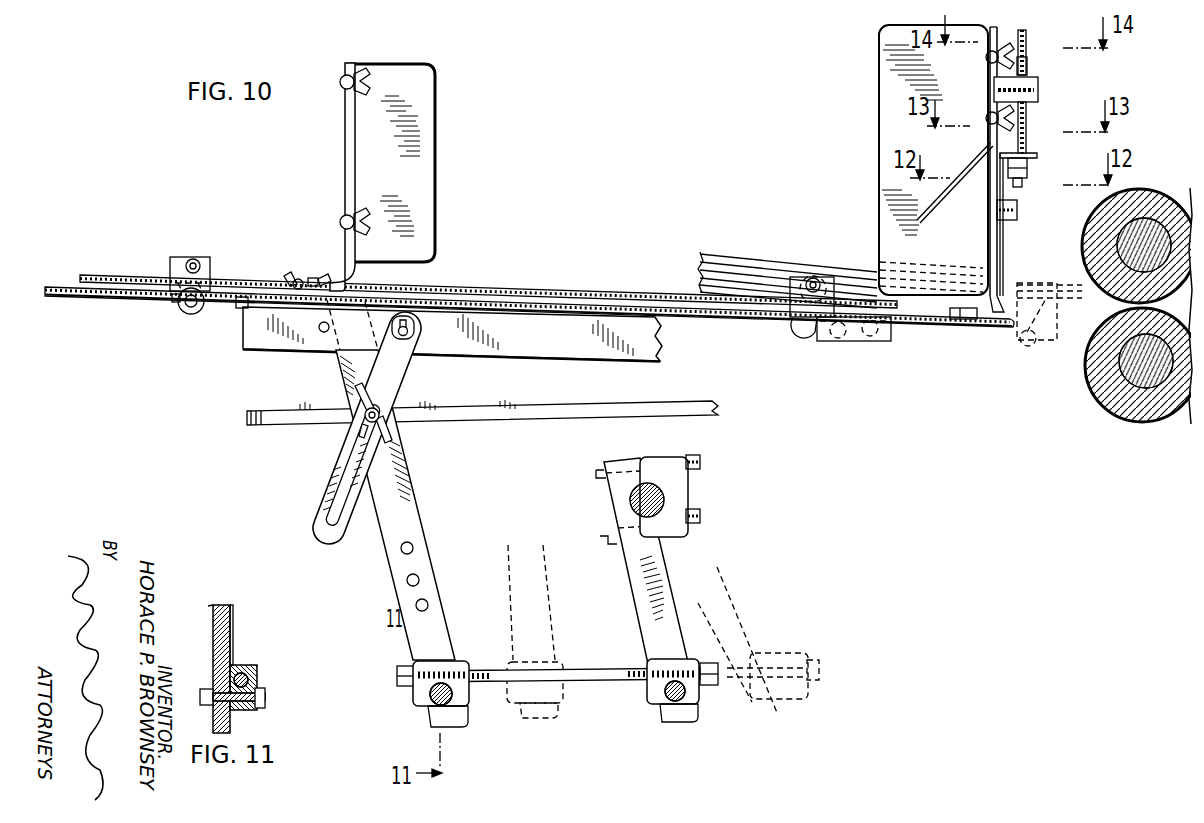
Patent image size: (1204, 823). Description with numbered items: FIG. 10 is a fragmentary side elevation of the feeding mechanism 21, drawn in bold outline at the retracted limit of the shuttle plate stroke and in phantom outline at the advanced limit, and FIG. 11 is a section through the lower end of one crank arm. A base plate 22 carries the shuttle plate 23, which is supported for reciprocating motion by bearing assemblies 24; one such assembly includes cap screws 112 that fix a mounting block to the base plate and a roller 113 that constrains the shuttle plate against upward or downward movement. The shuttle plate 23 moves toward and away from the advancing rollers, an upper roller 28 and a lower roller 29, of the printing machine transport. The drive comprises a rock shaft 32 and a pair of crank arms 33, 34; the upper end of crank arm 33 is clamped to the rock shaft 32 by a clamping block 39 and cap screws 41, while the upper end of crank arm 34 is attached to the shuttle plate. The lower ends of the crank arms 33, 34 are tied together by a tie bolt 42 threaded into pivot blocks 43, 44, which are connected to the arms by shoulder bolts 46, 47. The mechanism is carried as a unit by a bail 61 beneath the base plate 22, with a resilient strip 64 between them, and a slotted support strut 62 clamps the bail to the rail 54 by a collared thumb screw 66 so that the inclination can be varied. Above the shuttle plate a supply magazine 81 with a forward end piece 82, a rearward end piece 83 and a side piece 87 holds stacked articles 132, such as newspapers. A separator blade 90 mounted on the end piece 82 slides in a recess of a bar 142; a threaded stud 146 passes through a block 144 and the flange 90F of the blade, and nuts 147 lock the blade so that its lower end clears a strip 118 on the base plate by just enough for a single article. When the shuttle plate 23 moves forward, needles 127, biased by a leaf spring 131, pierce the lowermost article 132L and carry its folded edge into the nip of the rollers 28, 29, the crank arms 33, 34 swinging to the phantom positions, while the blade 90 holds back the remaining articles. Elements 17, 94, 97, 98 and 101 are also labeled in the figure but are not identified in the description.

In FIG. 10, the adjusting screw 17 is at (1028, 76).
In FIG. 10, the feeding mechanism 21 is at (226, 186).
In FIG. 10, the base plate 22 is at (94, 296).
In FIG. 10, the shuttle plate 23 is at (105, 273).
In FIG. 10, the bearing assemblies 24 is at (176, 252).
In FIG. 10, the upper roller 28 is at (1143, 200).
In FIG. 10, the lower roller 29 is at (1137, 398).
In FIG. 10, the rock shaft 32 is at (632, 497).
In FIG. 10, the crank arm 33 is at (645, 580).
In FIG. 10, the crank arm 34 is at (405, 504).
In FIG. 11, the crank arm 34 is at (222, 626).
In FIG. 10, the clamping block 39 is at (690, 492).
In FIG. 10, the cap screws 41 is at (701, 462).
In FIG. 10, the tie bolt 42 is at (610, 680).
In FIG. 11, the tie bolt 42 is at (243, 673).
In FIG. 10, the pivot block 43 is at (692, 700).
In FIG. 10, the pivot block 44 is at (418, 698).
In FIG. 11, the pivot block 44 is at (257, 676).
In FIG. 10, the shoulder bolt 46 is at (668, 704).
In FIG. 10, the shoulder bolt 47 is at (438, 706).
In FIG. 11, the shoulder bolt 47 is at (265, 700).
In FIG. 10, the rail 54 is at (265, 421).
In FIG. 10, the bail 61 is at (270, 327).
In FIG. 10, the slotted support strut 62 is at (334, 478).
In FIG. 10, the resilient strip 64 is at (238, 306).
In FIG. 10, the collared thumb screw 66 is at (402, 438).
In FIG. 10, the supply magazine 81 is at (756, 105).
In FIG. 10, the forward end piece 82 is at (990, 238).
In FIG. 10, the rearward end piece 83 is at (356, 147).
In FIG. 10, the forward side piece 87 is at (882, 60).
In FIG. 10, the separator blade 90 is at (1004, 248).
In FIG. 10, the flange 90F is at (1028, 150).
In FIG. 10, the bent strip 94 is at (344, 173).
In FIG. 10, the wing nut 97 is at (313, 276).
In FIG. 10, the bolt 98 is at (291, 273).
In FIG. 10, the guide plate 101 is at (418, 116).
In FIG. 10, the cap screws 112 is at (174, 301).
In FIG. 10, the roller 113 is at (196, 259).
In FIG. 10, the strips 118 is at (1010, 290).
In FIG. 10, the needles 127 is at (878, 321).
In FIG. 10, the leaf spring 131 is at (840, 322).
In FIG. 10, the articles 132 is at (765, 258).
In FIG. 10, the lowermost article 132L is at (770, 294).
In FIG. 10, the bar 142 is at (1018, 212).
In FIG. 10, the block 144 is at (1038, 82).
In FIG. 10, the threaded stud 146 is at (1030, 108).
In FIG. 10, the nuts 147 is at (1033, 166).